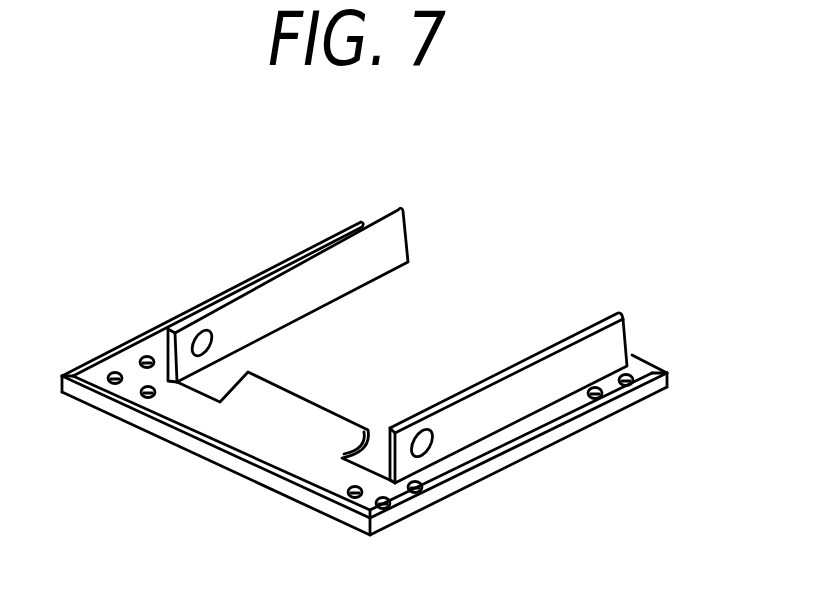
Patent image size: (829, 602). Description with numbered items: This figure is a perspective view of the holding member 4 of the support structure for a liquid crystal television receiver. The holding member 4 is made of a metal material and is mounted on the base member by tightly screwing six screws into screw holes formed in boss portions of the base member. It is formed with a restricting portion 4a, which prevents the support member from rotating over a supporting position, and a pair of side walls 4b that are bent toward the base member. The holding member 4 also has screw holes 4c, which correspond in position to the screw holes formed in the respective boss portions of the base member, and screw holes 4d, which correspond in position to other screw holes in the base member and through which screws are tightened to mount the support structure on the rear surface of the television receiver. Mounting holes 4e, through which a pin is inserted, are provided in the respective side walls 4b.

The holding member 4 is at (257, 442).
The restricting portion 4a is at (303, 412).
The side walls 4b is at (360, 260).
The screw holes 4c is at (142, 350).
The screw holes 4d is at (103, 370).
The mounting holes 4e is at (212, 333).